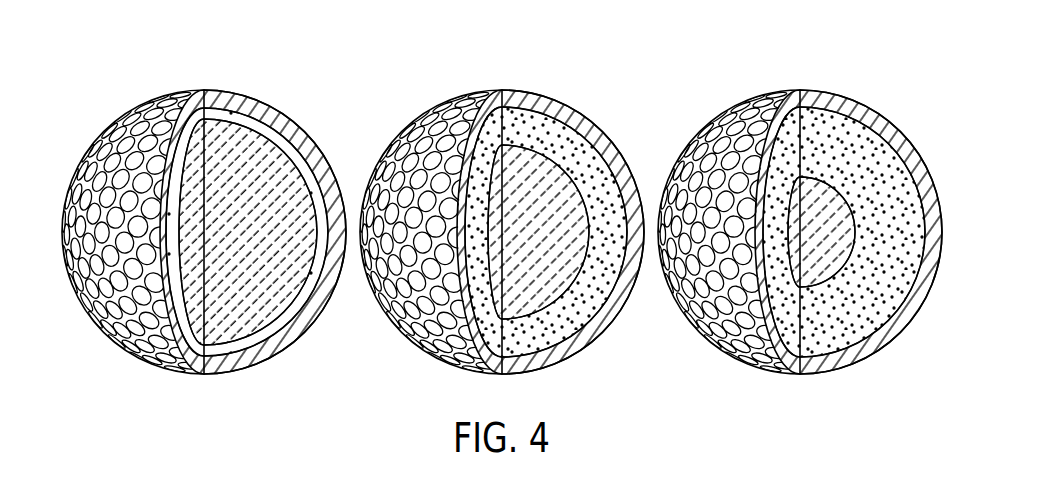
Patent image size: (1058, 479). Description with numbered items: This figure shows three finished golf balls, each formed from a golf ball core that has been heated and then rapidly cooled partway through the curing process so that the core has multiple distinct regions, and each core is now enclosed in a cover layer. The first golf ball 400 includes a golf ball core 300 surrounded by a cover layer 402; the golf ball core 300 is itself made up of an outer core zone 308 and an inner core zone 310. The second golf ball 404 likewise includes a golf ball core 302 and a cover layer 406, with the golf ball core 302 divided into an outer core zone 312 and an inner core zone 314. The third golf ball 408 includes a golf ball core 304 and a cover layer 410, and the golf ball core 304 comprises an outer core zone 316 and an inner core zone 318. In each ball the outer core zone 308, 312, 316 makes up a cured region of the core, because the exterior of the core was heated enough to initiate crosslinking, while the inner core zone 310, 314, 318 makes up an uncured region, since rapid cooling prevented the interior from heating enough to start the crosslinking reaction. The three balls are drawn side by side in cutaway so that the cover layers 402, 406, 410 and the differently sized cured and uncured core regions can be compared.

The golf ball 400 is at (114, 100).
The golf ball core 300 is at (219, 90).
The outer core zone 308 is at (247, 110).
The inner core zone 310 is at (280, 146).
The cover layer 402 is at (268, 113).
The golf ball 404 is at (412, 101).
The golf ball core 302 is at (513, 90).
The outer core zone 312 is at (533, 120).
The inner core zone 314 is at (578, 166).
The cover layer 406 is at (577, 120).
The golf ball 408 is at (710, 103).
The golf ball core 304 is at (813, 88).
The outer core zone 316 is at (828, 120).
The inner core zone 318 is at (837, 190).
The cover layer 410 is at (876, 118).